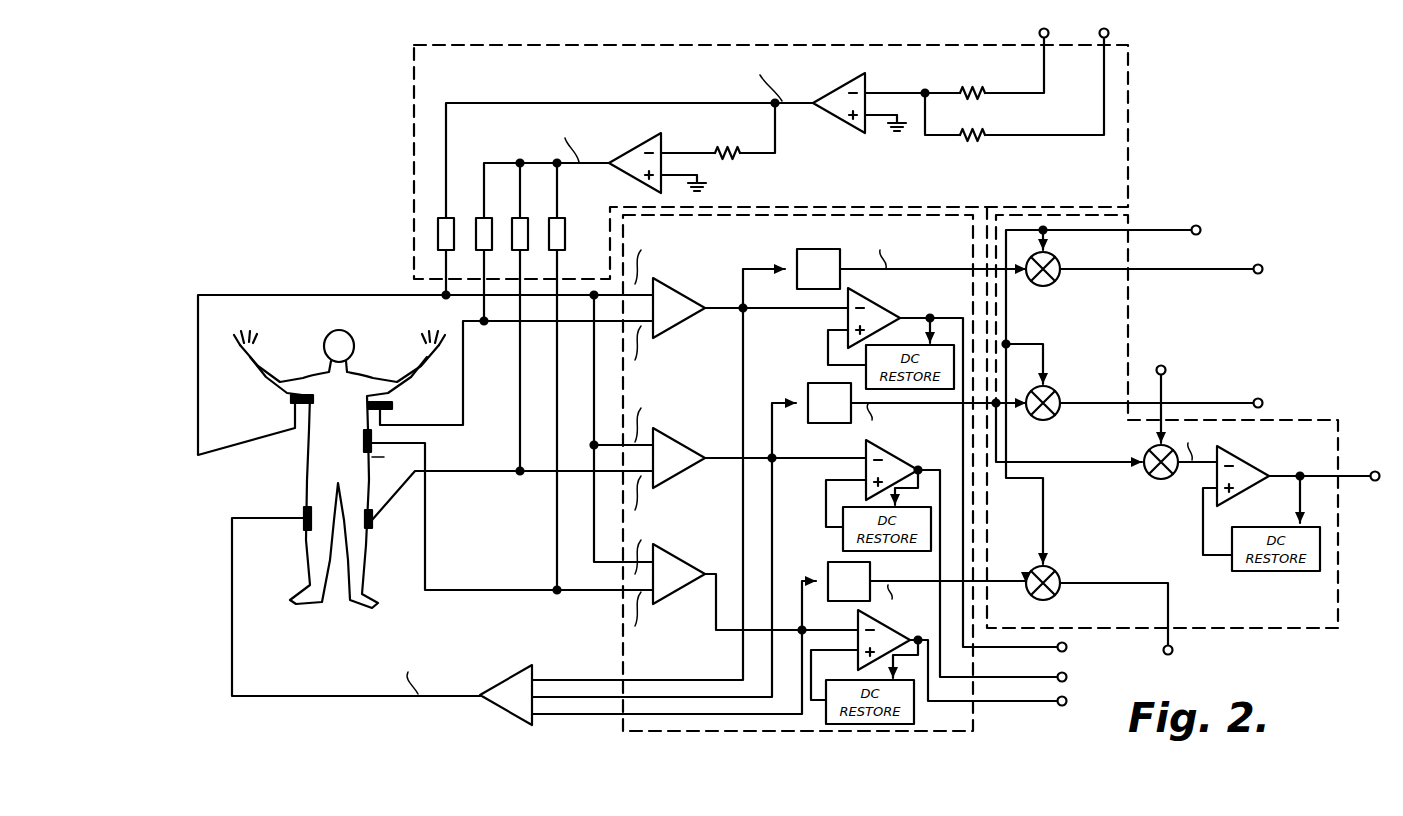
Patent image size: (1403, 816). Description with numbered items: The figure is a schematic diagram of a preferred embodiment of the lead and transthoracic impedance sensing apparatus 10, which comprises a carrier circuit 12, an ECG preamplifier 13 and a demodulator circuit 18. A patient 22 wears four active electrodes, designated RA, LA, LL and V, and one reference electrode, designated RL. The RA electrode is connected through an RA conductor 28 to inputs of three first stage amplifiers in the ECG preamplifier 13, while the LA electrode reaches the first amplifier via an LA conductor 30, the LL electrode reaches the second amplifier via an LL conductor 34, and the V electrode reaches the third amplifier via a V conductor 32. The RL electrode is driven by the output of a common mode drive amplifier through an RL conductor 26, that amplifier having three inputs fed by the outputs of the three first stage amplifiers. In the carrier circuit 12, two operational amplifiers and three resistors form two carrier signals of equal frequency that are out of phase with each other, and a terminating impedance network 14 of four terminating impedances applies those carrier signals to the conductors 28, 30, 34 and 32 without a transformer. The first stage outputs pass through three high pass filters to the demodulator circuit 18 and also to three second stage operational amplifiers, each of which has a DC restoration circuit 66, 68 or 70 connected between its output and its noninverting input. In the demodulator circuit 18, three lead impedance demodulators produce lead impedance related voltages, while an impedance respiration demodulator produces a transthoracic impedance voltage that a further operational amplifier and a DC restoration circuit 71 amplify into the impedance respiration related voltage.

The lead and transthoracic impedance sensing apparatus 10 is at (1187, 173).
The carrier circuit 12 is at (412, 134).
The ECG preamplifier 13 is at (878, 731).
The impedance elements Z1-Z4 14 is at (578, 248).
The demodulator circuit 18 is at (1235, 630).
The patient 22 is at (364, 602).
The RL conductor 26 is at (304, 698).
The RA conductor 28 is at (285, 293).
The LA conductor 30 is at (464, 394).
The V conductor 32 is at (456, 588).
The LL conductor 34 is at (442, 476).
The DC restoration circuit 66 is at (942, 391).
The DC restoration circuit 68 is at (888, 553).
The DC restoration circuit 70 is at (914, 712).
The DC restoration circuit 71 is at (1264, 586).